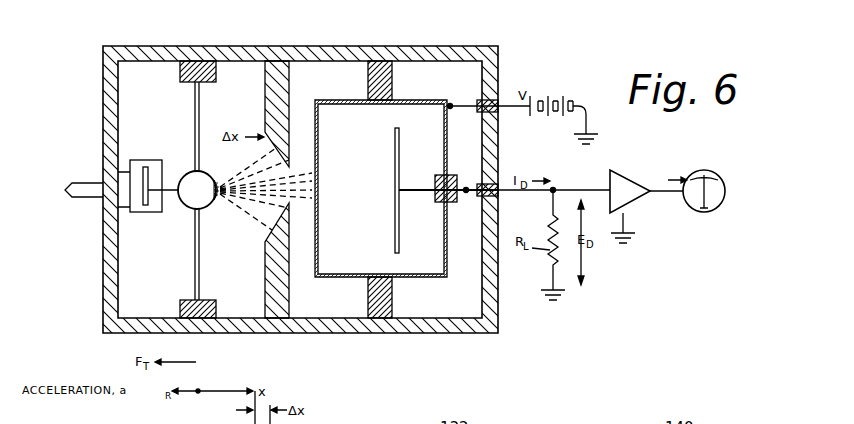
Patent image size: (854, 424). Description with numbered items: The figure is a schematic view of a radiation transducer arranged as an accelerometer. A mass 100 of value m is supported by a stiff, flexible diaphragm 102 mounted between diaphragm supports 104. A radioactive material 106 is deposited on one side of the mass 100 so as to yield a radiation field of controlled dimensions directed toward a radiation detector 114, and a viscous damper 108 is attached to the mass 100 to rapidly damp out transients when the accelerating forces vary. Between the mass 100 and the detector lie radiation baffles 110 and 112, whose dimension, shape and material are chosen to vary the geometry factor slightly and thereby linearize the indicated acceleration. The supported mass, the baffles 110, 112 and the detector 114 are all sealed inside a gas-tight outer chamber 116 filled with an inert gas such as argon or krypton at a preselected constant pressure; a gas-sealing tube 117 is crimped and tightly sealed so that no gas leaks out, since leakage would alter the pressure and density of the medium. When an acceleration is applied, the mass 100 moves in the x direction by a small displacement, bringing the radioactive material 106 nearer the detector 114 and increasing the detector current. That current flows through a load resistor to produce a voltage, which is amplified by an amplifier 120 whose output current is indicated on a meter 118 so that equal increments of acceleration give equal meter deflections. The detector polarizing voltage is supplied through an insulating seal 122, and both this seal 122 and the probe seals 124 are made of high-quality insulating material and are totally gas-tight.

The mass 100 is at (190, 172).
The diaphragm 102 is at (194, 250).
The diaphragm supports 104 is at (207, 300).
The radioactive material 106 is at (218, 200).
The viscous damper 108 is at (141, 213).
The radiation baffle 110 is at (265, 114).
The radiation baffle 112 is at (265, 247).
The radiation detector 114 is at (371, 167).
The outer chamber 116 is at (411, 47).
The gas-sealing tube 117 is at (88, 198).
The meter 118 is at (719, 206).
The amplifier 120 is at (618, 172).
The insulating seal 122 is at (481, 102).
The probe seals 124 is at (477, 186).